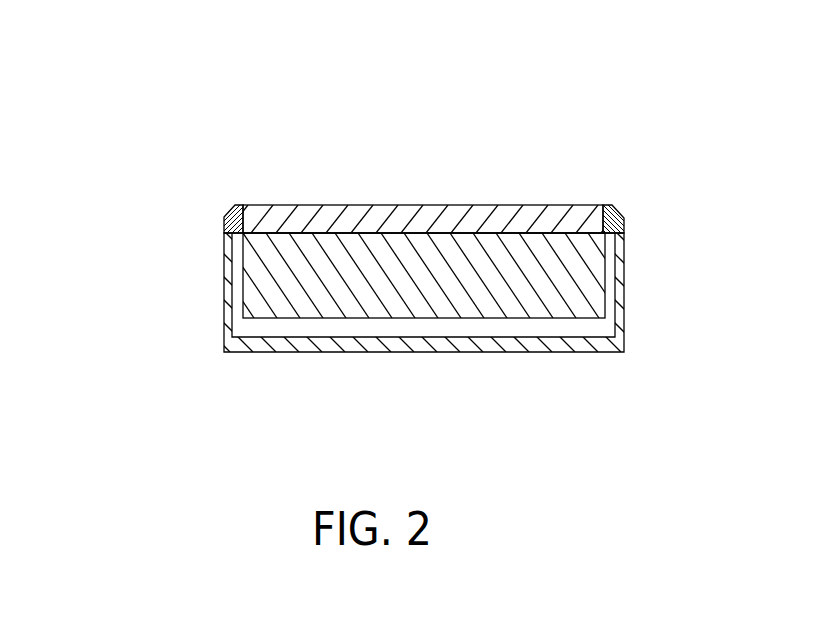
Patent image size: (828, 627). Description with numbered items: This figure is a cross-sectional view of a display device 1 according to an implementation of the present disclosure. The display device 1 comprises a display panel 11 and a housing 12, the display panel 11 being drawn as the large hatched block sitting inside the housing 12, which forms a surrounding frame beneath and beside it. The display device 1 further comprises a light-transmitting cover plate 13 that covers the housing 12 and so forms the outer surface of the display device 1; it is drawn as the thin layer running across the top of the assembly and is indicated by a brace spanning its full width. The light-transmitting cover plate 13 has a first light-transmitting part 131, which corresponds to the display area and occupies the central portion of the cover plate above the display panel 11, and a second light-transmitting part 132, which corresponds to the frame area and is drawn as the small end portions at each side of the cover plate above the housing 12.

The display device 1 is at (148, 147).
The display panel 11 is at (432, 273).
The housing 12 is at (620, 272).
The light-transmitting cover plate 13 is at (557, 113).
The first light-transmitting part 131 is at (453, 220).
The second light-transmitting part 132 is at (235, 205).